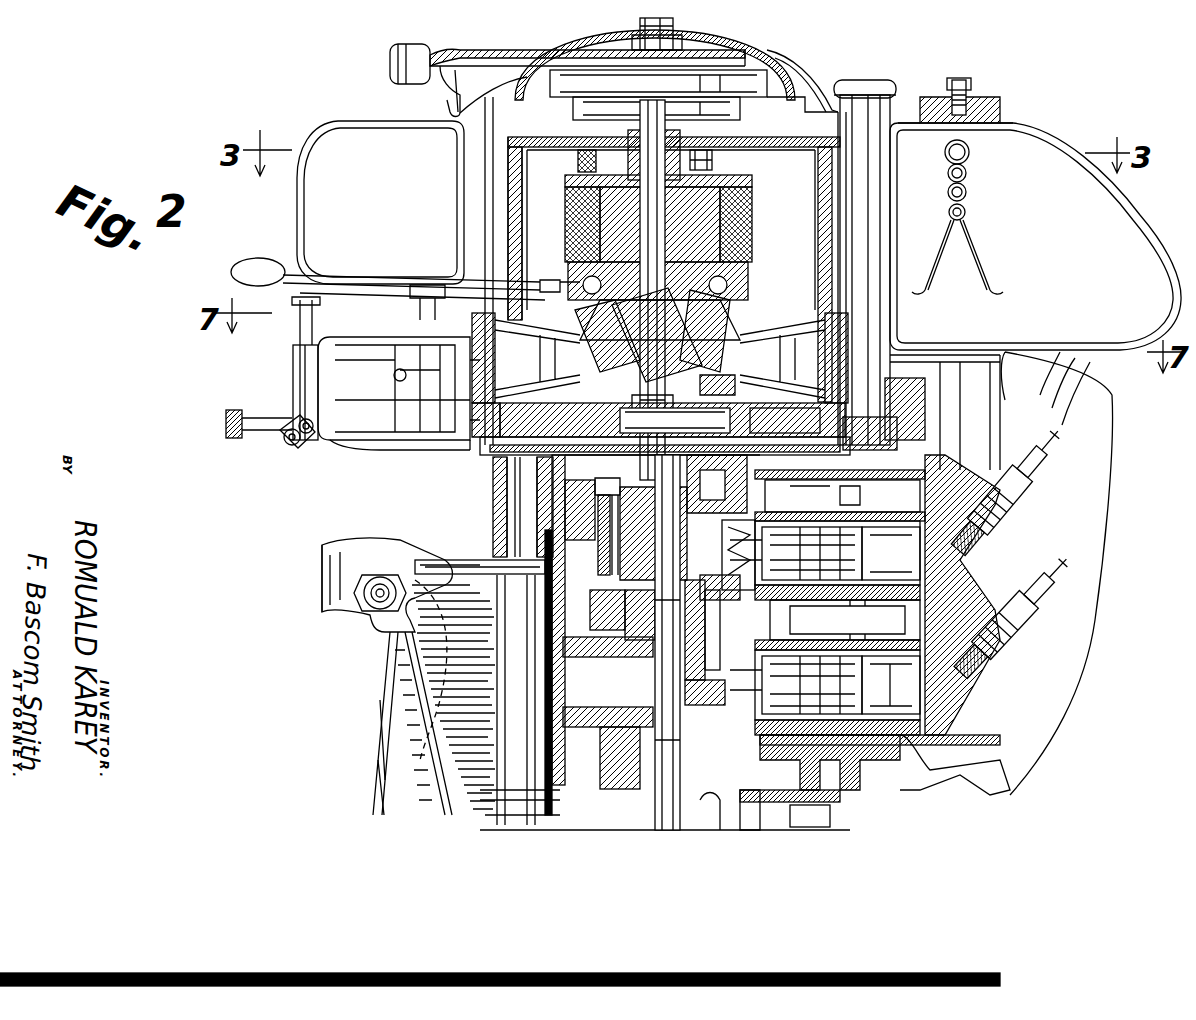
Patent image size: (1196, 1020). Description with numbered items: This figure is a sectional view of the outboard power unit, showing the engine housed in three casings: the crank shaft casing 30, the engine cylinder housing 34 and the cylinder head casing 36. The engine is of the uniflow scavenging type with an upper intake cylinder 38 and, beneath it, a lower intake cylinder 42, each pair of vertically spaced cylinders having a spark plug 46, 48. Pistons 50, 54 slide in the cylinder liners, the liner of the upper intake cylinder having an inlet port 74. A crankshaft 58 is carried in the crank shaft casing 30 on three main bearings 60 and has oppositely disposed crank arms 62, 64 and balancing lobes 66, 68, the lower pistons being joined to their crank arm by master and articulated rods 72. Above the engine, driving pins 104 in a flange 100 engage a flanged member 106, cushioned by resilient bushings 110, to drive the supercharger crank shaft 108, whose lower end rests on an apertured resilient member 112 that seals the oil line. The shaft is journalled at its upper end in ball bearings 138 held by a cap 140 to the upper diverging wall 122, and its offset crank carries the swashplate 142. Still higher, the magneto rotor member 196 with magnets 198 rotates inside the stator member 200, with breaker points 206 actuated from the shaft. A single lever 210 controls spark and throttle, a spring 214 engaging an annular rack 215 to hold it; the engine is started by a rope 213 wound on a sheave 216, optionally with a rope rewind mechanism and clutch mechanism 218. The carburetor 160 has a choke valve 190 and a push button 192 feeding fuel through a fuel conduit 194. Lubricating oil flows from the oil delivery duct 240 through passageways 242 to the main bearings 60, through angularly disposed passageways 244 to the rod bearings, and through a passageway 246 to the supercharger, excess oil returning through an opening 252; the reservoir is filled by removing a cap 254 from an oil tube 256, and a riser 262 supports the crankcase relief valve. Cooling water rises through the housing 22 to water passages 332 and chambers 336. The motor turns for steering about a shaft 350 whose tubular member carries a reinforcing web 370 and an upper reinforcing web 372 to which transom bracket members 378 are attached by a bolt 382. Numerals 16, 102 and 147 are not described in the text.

The fuel tank 16 is at (315, 200).
The housing 22 is at (520, 800).
The crank shaft casing 30 is at (560, 690).
The engine cylinder housing 34 is at (898, 430).
The cylinder head casing 36 is at (1000, 560).
The cylinder 38 is at (915, 570).
The cylinder 42 is at (820, 718).
The spark plug 46 is at (1020, 500).
The spark plug 48 is at (1035, 650).
The piston 50 is at (845, 561).
The piston 54 is at (888, 655).
The crankshaft 58 is at (600, 612).
The main bearings 60 is at (720, 470).
The crank arm 62 is at (598, 530).
The crank arm 64 is at (690, 697).
The balancing lobe 66 is at (745, 532).
The balancing lobe 68 is at (613, 624).
The master and articulated rods 72 is at (750, 556).
The inlet port 74 is at (866, 562).
The flange 100 is at (530, 490).
The carburetor flange 102 is at (450, 445).
The driving pins 104 is at (735, 380).
The flanged member 106 is at (485, 448).
The supercharger crank shaft 108 is at (645, 172).
The resilient bushings 110 is at (738, 405).
The apertured resilient member 112 is at (600, 492).
The upper diverging wall 122 is at (735, 310).
The ball bearings 138 is at (578, 248).
The cap 140 is at (573, 225).
The plate 142 is at (705, 305).
The fan 147 is at (660, 358).
The carburetor 160 is at (365, 415).
The choke valve 190 is at (243, 415).
The push button 192 is at (300, 368).
The fuel conduit 194 is at (308, 440).
The rotor member 196 is at (720, 188).
The magnets 198 is at (727, 235).
The stator member 200 is at (740, 218).
The breaker points 206 is at (715, 165).
The lever 210 is at (700, 112).
The rope 213 is at (535, 60).
The spring 214 is at (725, 70).
The annular rack 215 is at (590, 137).
The sheave 216 is at (590, 55).
The rope rewind mechanism and clutch mechanism 218 is at (794, 92).
The oil delivery duct 240 is at (800, 480).
The passageways 242 is at (785, 414).
The angularly disposed passageways 244 is at (615, 585).
The passageway 246 is at (842, 496).
The opening 252 is at (500, 470).
The cap 254 is at (865, 88).
The oil tube 256 is at (865, 135).
The riser 262 is at (898, 395).
The water passages 332 is at (892, 738).
The chambers 336 is at (960, 485).
The shaft 350 is at (498, 535).
The reinforcing web 370 is at (430, 690).
The upper reinforcing web 372 is at (447, 563).
The bracket members 378 is at (400, 742).
The bolt 382 is at (378, 598).